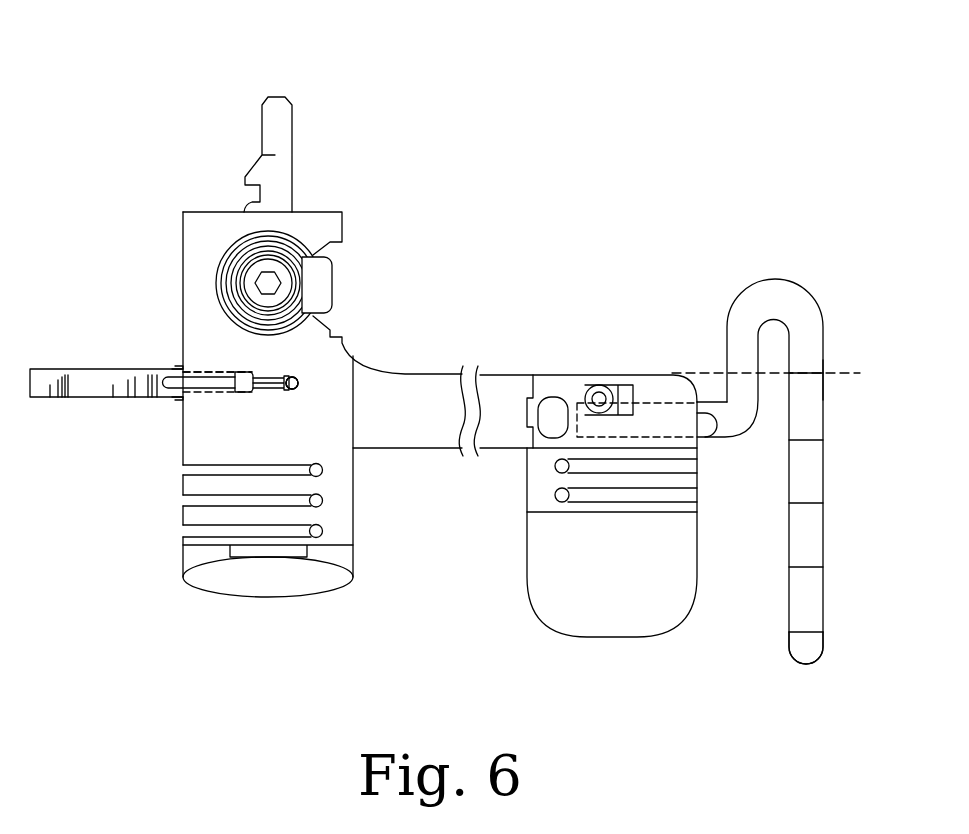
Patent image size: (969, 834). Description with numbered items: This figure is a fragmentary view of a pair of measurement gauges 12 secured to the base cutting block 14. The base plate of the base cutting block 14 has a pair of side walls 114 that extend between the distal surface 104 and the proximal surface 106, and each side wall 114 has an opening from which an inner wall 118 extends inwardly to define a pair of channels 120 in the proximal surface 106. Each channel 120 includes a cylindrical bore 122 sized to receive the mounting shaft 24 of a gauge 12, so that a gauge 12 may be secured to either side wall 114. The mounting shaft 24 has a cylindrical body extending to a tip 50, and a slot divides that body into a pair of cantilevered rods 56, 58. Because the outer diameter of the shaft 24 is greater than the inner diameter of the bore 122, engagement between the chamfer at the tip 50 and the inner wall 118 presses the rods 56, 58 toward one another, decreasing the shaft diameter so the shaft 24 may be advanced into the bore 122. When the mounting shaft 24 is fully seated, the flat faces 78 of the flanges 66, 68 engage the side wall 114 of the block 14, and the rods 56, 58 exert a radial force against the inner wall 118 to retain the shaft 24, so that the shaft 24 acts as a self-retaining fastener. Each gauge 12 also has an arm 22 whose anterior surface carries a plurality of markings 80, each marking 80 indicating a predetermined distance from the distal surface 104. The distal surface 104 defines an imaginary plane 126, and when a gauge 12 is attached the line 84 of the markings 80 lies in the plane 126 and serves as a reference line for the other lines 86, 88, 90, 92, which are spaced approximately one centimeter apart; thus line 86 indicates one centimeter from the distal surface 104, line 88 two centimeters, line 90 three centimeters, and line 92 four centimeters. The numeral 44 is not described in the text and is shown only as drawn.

The base cutting block 14 is at (637, 105).
The measurement gauge 12 is at (52, 397).
The arm 22 is at (790, 420).
The mounting shaft 24 is at (218, 395).
The rod end 44 is at (803, 664).
The tip 50 is at (295, 377).
The cantilevered rod 56 is at (268, 392).
The cantilevered rod 58 is at (255, 372).
The flange 66 is at (180, 369).
The flange 68 is at (165, 398).
The flat face 78 is at (185, 403).
The markings 80 is at (822, 378).
The line 84 is at (805, 372).
The line 86 is at (812, 440).
The line 88 is at (812, 503).
The line 90 is at (812, 567).
The line 92 is at (812, 632).
The distal surface 104 is at (574, 374).
The proximal surface 106 is at (190, 234).
The side wall 114 is at (185, 278).
The inner wall 118 is at (210, 368).
The channel 120 is at (300, 392).
The cylindrical bore 122 is at (315, 383).
The imaginary plane 126 is at (830, 372).